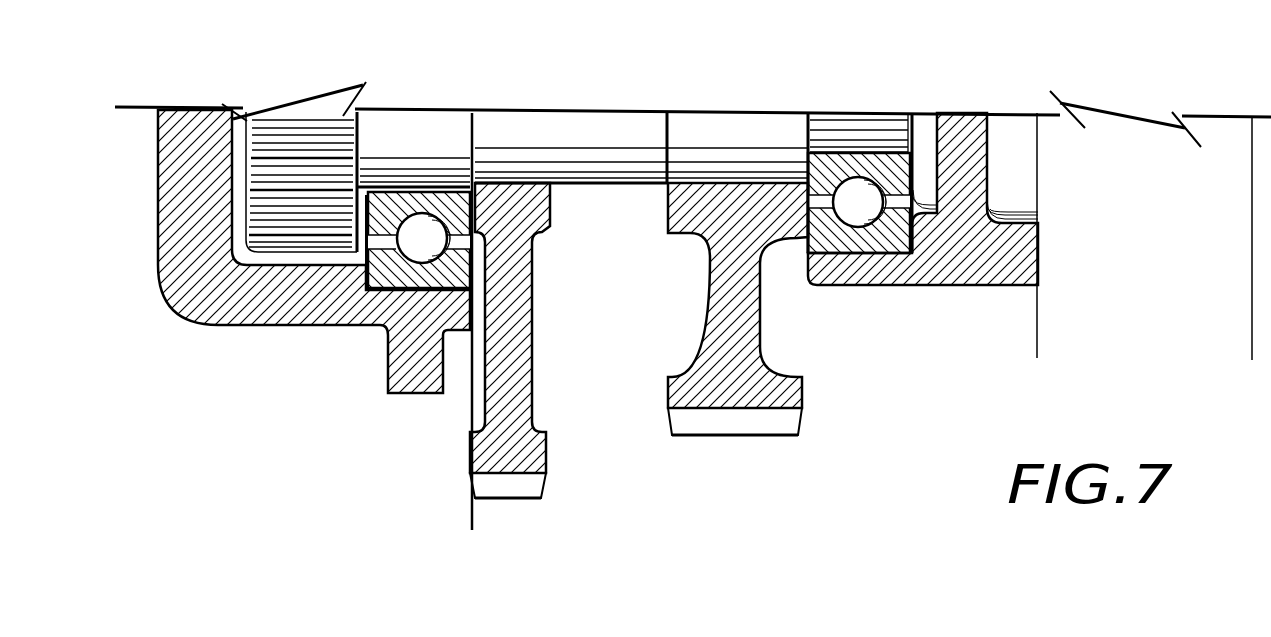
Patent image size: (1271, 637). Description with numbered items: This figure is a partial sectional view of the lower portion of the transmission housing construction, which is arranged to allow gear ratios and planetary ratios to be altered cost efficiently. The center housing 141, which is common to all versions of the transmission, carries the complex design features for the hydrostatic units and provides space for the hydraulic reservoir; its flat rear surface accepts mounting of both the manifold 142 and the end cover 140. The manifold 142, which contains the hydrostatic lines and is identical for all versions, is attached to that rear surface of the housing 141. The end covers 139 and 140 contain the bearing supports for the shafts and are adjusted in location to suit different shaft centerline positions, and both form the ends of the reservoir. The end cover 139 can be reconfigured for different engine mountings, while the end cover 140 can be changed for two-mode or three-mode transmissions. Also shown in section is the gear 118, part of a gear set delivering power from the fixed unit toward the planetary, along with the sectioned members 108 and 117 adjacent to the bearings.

The first member 108 is at (513, 320).
The spring 117 is at (305, 122).
The gear 118 is at (717, 390).
The end cover 139 is at (287, 308).
The end cover 140 is at (877, 258).
The center housing 141 is at (468, 508).
The manifold 142 is at (1252, 277).